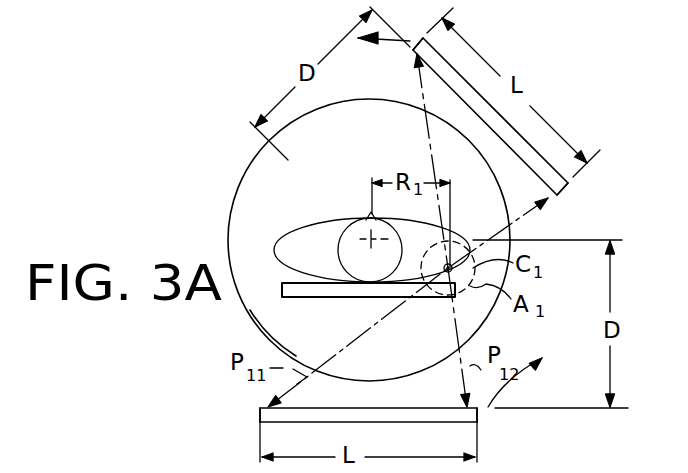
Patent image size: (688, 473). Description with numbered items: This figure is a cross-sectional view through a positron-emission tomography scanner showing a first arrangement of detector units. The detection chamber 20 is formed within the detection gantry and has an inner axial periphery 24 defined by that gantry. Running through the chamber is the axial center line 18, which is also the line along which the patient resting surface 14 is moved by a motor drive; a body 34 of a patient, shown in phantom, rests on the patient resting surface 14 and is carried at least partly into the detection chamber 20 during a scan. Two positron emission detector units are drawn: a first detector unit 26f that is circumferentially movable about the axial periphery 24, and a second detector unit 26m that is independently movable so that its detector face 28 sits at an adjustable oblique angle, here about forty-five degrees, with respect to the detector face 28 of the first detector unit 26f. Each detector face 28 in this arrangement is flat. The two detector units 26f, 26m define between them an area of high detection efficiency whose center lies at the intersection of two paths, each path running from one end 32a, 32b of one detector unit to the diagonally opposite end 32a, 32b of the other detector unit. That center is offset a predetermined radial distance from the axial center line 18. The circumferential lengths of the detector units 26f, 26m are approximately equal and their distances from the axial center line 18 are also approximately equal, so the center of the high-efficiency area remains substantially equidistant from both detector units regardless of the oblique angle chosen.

The detection chamber 20 is at (357, 171).
The axial center line 18 is at (356, 228).
The body 34 is at (288, 242).
The patient resting surface 14 is at (284, 298).
The inner axial periphery 24 is at (296, 356).
The detector face 28 is at (503, 140).
The second detector unit 26m is at (503, 118).
The first detector unit 26f is at (368, 423).
The end 32a is at (566, 181).
The end 32b is at (428, 45).